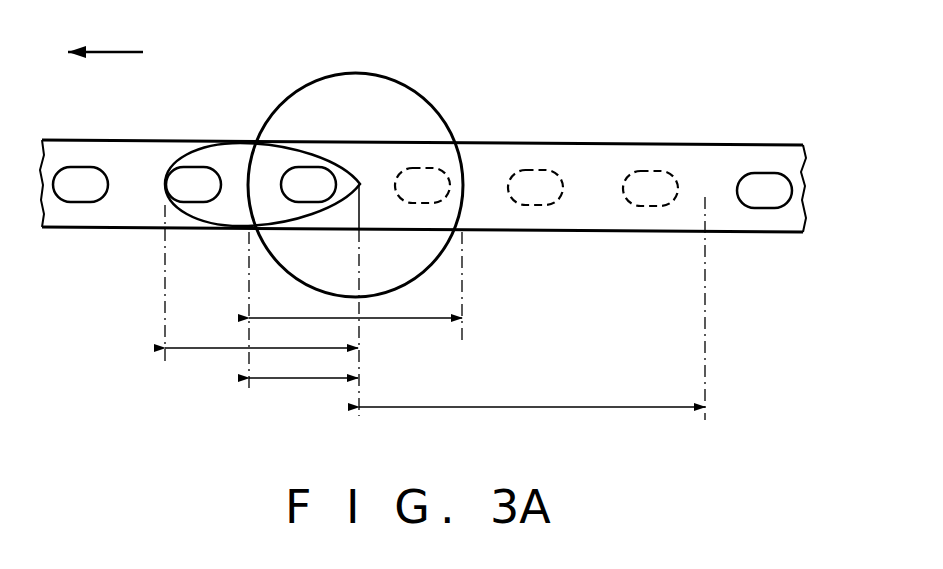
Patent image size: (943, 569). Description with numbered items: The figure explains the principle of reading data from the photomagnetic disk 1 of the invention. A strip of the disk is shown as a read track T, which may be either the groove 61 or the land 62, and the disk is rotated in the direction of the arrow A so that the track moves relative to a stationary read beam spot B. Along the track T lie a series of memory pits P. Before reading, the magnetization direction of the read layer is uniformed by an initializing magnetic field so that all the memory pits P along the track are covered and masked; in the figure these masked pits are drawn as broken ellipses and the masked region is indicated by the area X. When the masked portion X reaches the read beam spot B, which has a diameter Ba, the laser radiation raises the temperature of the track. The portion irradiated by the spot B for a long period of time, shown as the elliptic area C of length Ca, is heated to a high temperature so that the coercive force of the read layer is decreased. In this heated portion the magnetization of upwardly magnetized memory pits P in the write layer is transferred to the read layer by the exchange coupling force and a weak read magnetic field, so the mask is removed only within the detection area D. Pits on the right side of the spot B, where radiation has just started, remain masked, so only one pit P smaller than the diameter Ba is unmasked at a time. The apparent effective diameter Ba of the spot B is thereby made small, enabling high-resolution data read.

The direction of rotation A is at (110, 52).
The read track T is at (770, 232).
The groove 61 is at (425, 211).
The land 62 is at (425, 211).
The photomagnetic disk 1 is at (687, 152).
The memory pit P is at (82, 194).
The read beam spot B is at (442, 118).
The elliptic area C is at (204, 153).
The diameter of spot Ba is at (432, 320).
The irradiated portion Ca is at (206, 349).
The detection area D is at (310, 379).
The masked area X is at (576, 408).